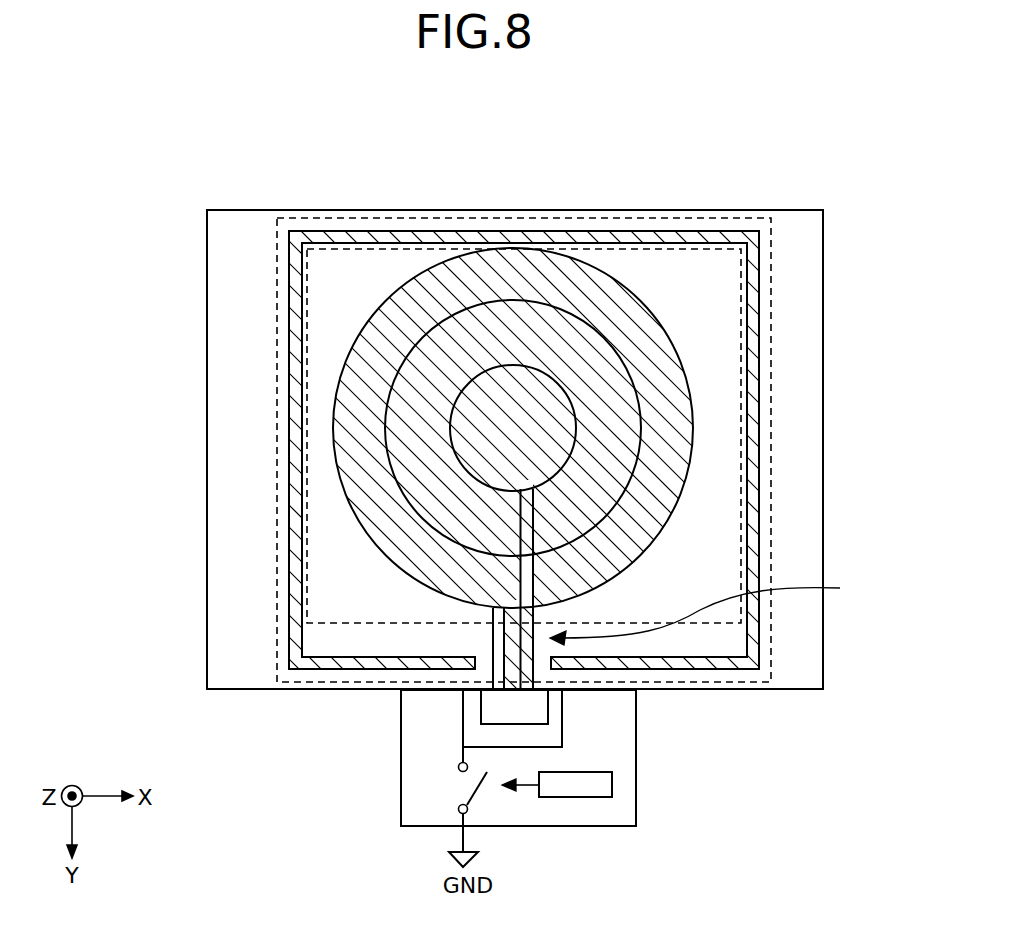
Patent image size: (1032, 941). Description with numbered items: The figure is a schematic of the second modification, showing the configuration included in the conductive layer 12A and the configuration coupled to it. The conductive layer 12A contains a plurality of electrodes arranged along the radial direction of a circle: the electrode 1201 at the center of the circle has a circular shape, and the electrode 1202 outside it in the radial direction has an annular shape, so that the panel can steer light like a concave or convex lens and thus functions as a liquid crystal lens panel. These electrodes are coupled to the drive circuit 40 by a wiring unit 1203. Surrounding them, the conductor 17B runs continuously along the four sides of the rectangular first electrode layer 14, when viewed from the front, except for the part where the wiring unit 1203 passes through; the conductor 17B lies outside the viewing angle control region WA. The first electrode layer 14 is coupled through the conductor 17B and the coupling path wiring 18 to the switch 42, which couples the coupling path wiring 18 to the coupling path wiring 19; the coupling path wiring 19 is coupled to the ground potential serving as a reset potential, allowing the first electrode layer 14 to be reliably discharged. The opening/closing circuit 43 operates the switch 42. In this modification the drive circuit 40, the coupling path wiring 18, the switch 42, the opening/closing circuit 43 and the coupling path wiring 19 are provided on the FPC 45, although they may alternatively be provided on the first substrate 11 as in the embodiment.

The first substrate 11 is at (823, 231).
The first electrode layer 14 is at (771, 337).
The conductor 17B is at (752, 485).
The viewing angle control region WA is at (714, 246).
The conductive layer 12A is at (418, 162).
The electrode 1201 is at (501, 383).
The electrode 1202 is at (601, 283).
The wiring unit 1203 is at (724, 613).
The coupling path wiring 18 is at (437, 730).
The coupling path wiring 19 is at (462, 840).
The drive circuit 40 is at (537, 712).
The switch 42 is at (448, 792).
The opening/closing circuit 43 is at (612, 786).
The FPC 45 is at (636, 752).